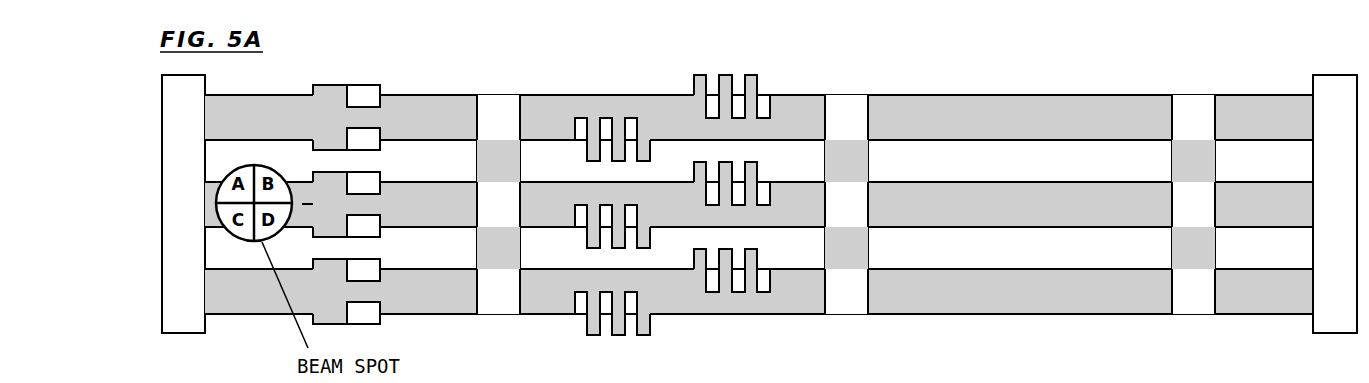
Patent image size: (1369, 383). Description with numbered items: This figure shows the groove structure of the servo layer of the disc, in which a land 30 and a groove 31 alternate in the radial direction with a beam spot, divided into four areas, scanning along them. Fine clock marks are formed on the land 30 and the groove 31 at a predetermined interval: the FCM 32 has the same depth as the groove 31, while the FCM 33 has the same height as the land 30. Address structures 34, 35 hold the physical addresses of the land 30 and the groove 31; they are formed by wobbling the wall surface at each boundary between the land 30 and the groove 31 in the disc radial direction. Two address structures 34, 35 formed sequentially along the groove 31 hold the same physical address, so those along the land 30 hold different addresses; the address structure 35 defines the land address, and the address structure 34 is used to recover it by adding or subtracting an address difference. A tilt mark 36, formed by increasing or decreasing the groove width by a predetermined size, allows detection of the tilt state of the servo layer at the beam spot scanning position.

The land 30 is at (198, 243).
The groove 31 is at (198, 287).
The FCM (Fine Clock Mark) 32 is at (1185, 247).
The FCM (Fine Clock Mark) 33 is at (1194, 333).
The address structure 34 is at (575, 328).
The address structure 35 is at (760, 66).
The tilt mark 36 is at (313, 73).